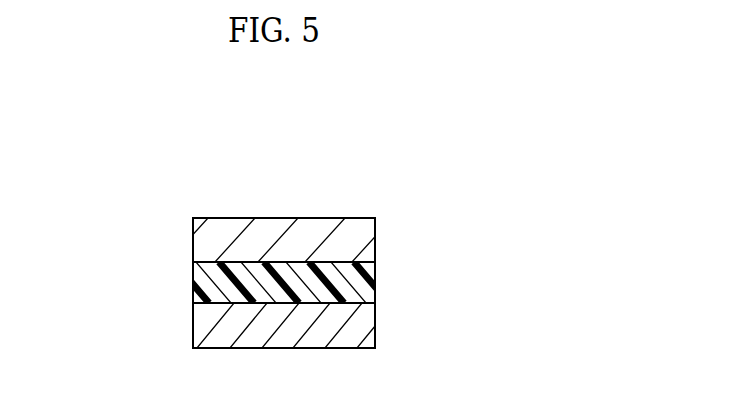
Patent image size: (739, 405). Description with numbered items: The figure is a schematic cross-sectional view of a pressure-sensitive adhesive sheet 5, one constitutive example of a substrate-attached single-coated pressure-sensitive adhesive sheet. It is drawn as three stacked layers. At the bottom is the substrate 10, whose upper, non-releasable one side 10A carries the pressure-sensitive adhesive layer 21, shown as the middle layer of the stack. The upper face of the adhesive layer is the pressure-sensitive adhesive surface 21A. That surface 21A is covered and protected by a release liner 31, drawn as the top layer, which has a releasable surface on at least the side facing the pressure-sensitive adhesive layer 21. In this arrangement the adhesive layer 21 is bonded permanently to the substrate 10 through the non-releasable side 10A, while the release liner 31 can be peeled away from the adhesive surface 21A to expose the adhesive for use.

The pressure-sensitive adhesive sheet 5 is at (344, 163).
The release liner 31 is at (375, 232).
The pressure-sensitive adhesive layer 21 is at (375, 281).
The pressure-sensitive adhesive surface 21A is at (217, 262).
The substrate 10 is at (375, 323).
The one side of substrate 10A is at (214, 303).